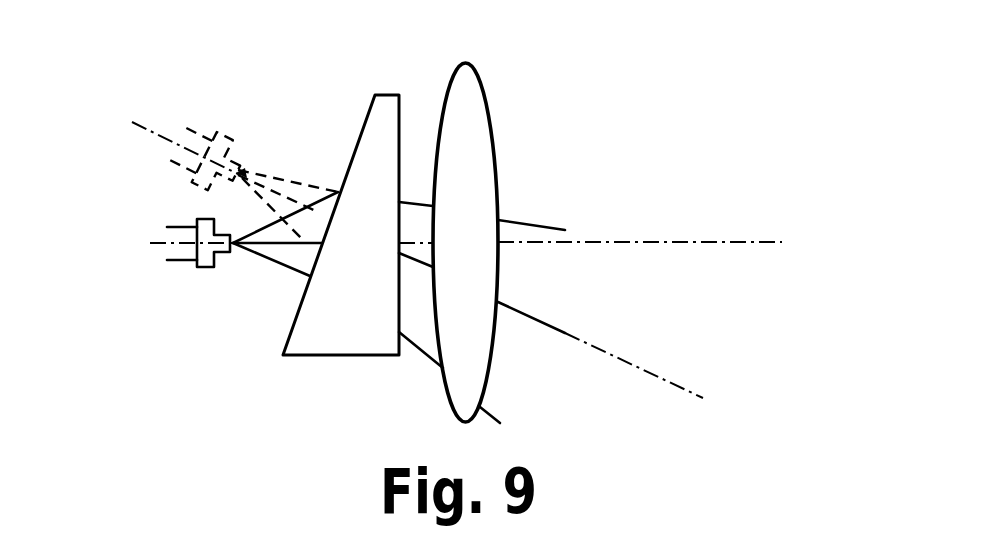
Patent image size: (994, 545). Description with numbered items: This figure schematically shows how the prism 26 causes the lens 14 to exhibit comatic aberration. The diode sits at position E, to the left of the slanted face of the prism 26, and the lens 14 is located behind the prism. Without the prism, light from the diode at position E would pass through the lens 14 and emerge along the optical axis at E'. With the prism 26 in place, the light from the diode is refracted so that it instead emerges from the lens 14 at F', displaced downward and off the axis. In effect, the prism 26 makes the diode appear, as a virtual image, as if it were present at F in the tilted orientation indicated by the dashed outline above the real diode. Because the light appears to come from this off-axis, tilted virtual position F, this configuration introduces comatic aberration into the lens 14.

The prism 26 is at (363, 127).
The lens 14 is at (473, 90).
The position E is at (213, 246).
The emergence point E' is at (614, 259).
The virtual image position F is at (204, 151).
The emergence point F' is at (679, 378).